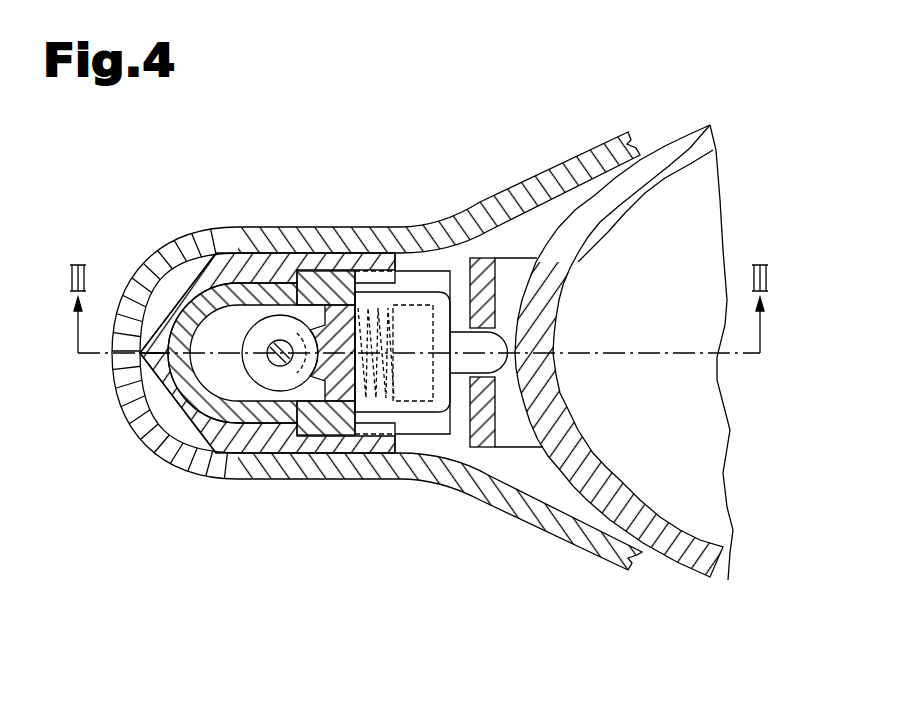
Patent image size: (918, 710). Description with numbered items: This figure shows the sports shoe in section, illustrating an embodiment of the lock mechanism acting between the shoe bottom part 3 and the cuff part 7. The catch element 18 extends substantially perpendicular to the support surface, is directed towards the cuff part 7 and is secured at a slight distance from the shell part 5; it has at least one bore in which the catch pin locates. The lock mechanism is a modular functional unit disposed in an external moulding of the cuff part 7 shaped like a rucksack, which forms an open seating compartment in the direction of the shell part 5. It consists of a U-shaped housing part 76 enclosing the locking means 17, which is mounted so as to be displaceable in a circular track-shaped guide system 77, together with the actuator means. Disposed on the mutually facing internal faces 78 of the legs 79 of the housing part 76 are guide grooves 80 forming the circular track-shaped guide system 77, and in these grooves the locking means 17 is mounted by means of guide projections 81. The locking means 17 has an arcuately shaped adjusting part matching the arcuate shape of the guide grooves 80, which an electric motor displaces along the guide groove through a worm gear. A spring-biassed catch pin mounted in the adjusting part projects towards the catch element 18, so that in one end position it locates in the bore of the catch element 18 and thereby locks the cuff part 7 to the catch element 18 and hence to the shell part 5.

The shoe bottom part 3 is at (693, 270).
The shell part 5 is at (687, 528).
The cuff part 7 is at (535, 178).
The locking means 17 is at (420, 410).
The catch element 18 is at (512, 427).
The housing part 76 is at (163, 402).
The circular track-shaped guide system 77 is at (341, 458).
The internal faces 78 is at (400, 291).
The legs 79 is at (268, 262).
The guide grooves 80 is at (381, 272).
The guide projections 81 is at (313, 272).